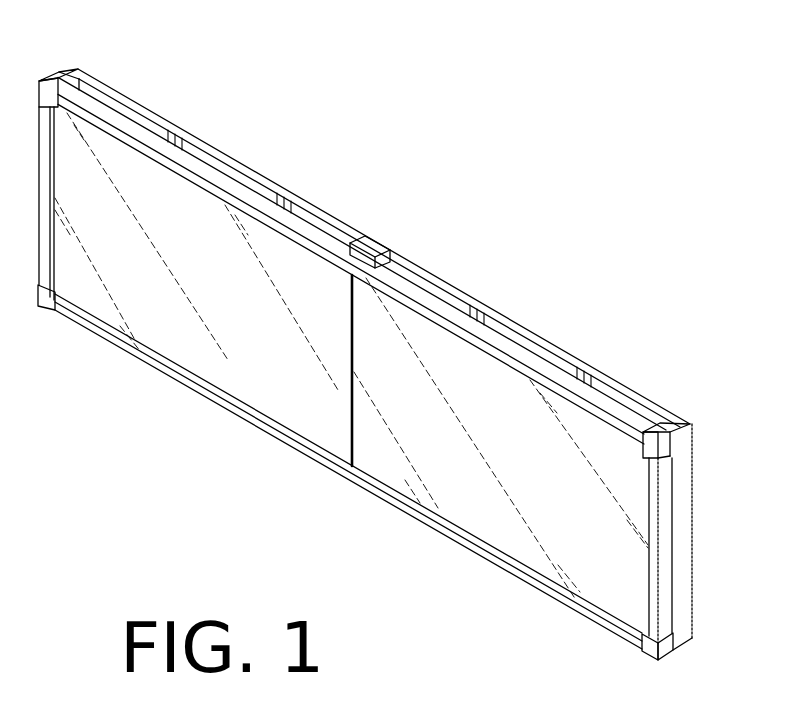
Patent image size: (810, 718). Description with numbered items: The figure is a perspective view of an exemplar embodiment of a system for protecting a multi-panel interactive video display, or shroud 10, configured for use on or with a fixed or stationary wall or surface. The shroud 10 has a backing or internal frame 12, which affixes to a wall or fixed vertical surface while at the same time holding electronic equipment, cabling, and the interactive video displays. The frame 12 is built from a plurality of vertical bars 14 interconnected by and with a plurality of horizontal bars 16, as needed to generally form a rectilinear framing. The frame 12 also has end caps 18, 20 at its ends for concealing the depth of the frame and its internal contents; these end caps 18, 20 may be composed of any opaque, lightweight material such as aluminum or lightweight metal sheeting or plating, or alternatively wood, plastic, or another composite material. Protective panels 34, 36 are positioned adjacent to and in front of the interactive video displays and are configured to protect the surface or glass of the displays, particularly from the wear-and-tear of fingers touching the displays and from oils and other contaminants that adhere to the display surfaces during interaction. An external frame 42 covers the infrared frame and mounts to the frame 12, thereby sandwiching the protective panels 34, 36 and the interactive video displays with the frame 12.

The shroud 10 is at (485, 240).
The frame 12 is at (245, 172).
The vertical bars 14 is at (179, 133).
The horizontal bars 16 is at (113, 91).
The end cap 18 is at (68, 70).
The end cap 20 is at (692, 515).
The protective panel 34 is at (186, 355).
The protective panel 36 is at (497, 536).
The external frame 42 is at (316, 456).